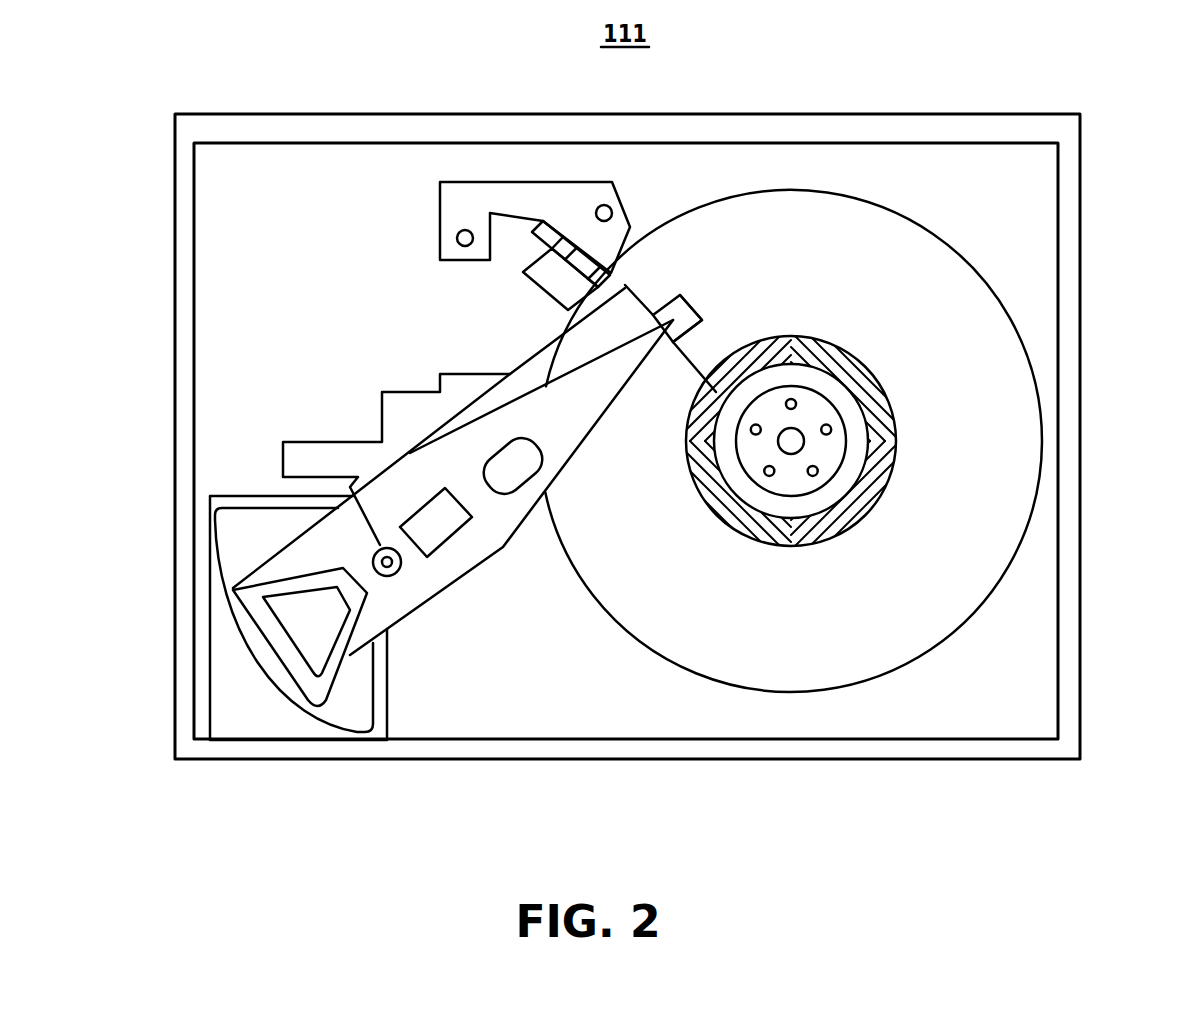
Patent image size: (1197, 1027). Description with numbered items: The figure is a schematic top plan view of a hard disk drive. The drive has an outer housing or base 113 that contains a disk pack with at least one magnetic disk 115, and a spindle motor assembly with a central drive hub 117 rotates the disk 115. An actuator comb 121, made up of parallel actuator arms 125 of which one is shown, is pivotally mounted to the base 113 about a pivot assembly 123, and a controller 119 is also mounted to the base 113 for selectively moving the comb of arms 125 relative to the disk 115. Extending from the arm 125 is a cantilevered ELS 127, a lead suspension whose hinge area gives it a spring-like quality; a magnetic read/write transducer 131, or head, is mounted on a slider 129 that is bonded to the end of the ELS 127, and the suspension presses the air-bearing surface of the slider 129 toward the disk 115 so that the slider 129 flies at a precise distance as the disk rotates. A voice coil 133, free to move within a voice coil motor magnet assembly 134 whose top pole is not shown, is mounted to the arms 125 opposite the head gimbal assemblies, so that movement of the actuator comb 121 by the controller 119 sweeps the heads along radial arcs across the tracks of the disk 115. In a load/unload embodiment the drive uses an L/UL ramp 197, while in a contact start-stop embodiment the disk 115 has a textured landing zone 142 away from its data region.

The base 113 is at (1072, 177).
The magnetic disk 115 is at (913, 221).
The central drive hub 117 is at (827, 452).
The controller 119 is at (297, 723).
The actuator comb 121 is at (413, 414).
The pivot assembly 123 is at (398, 577).
The actuator arm 125 is at (500, 553).
The ELS 127 is at (585, 398).
The slider 129 is at (681, 296).
The magnetic read/write transducer 131 is at (702, 320).
The voice coil 133 is at (272, 587).
The voice coil motor magnet assembly 134 is at (270, 662).
The textured landing zone 142 is at (806, 337).
The L/UL ramp 197 is at (556, 300).